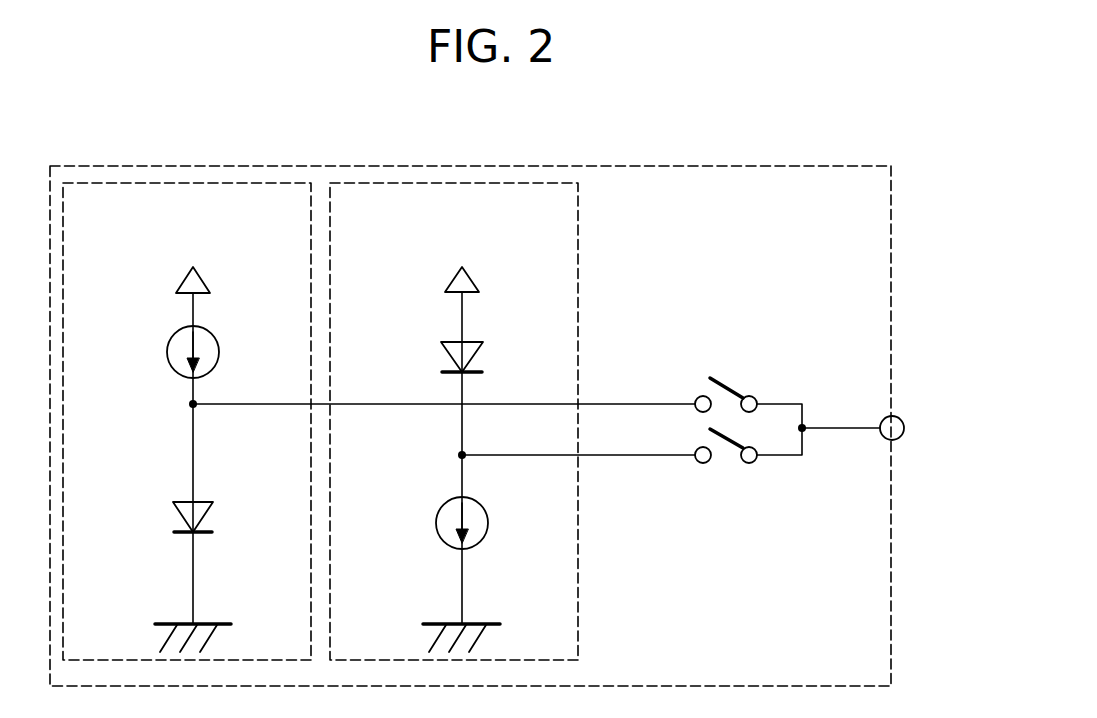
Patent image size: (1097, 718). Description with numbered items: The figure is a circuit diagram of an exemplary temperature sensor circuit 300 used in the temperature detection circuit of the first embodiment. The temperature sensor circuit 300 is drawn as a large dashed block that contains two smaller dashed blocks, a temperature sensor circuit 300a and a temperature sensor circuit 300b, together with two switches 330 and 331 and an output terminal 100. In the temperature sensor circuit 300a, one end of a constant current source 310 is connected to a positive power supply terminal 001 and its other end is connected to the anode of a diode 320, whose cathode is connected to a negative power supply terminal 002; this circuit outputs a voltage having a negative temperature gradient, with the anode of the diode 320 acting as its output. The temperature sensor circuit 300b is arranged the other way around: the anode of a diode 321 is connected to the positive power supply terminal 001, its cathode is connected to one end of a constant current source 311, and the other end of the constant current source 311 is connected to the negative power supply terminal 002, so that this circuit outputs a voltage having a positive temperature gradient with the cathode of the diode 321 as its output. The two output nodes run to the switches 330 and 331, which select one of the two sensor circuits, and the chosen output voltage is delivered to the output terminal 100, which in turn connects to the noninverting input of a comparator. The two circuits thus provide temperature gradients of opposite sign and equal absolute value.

The temperature sensor circuit 300 is at (837, 166).
The temperature sensor circuit 300a is at (258, 183).
The temperature sensor circuit 300b is at (512, 183).
The positive power supply terminal 001 is at (187, 281).
The negative power supply terminal 002 is at (167, 623).
The constant current source 310 is at (212, 331).
The constant current source 311 is at (448, 504).
The diode 320 is at (180, 502).
The diode 321 is at (475, 343).
The switch 330 is at (733, 383).
The switch 331 is at (735, 478).
The output terminal 100 is at (898, 417).